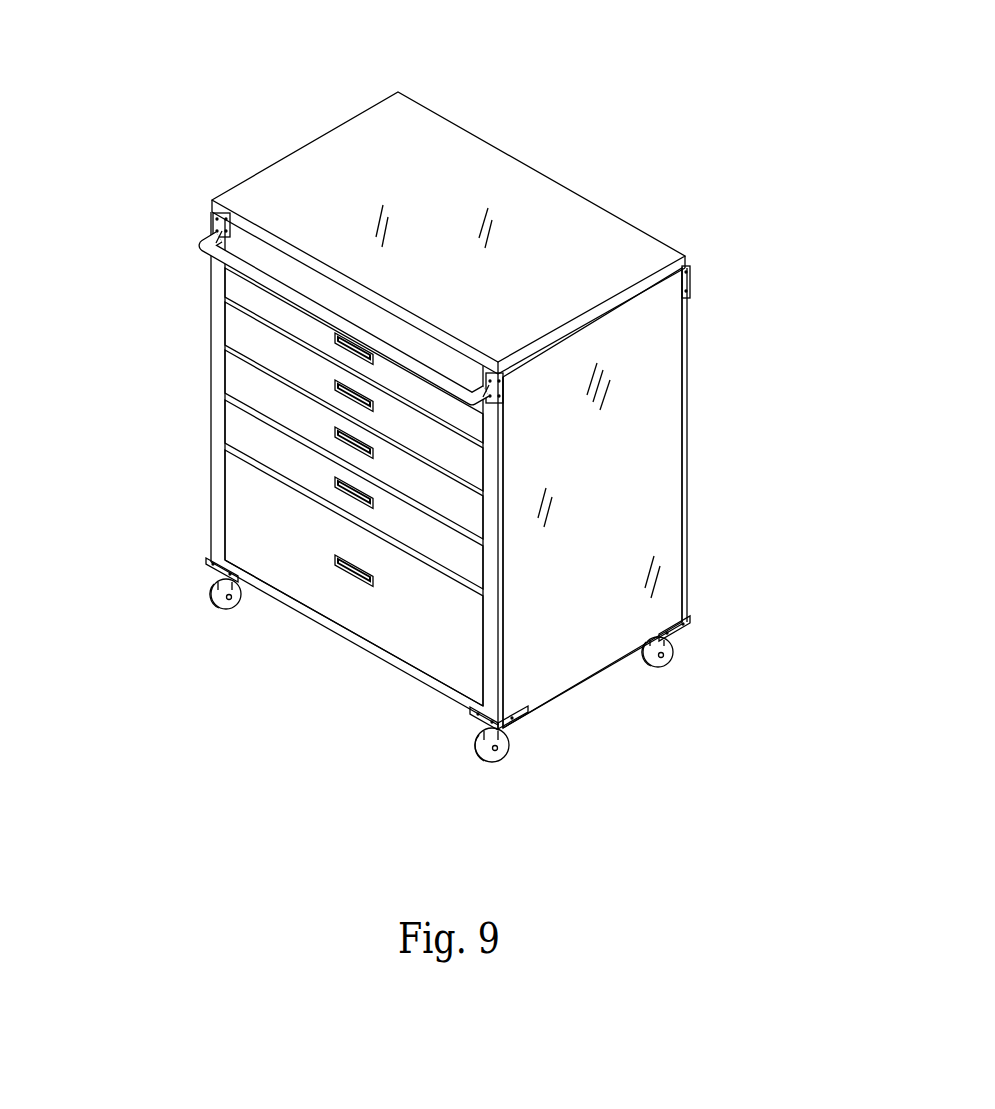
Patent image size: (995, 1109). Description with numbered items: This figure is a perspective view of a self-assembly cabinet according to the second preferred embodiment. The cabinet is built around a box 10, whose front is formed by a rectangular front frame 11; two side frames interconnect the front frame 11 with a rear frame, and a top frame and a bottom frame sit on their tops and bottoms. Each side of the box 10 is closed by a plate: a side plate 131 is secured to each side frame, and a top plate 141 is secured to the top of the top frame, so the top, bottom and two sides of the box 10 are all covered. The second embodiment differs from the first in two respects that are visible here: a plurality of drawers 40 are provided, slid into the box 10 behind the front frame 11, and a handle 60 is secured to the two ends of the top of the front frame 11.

The box 10 is at (451, 387).
The front frame 11 is at (218, 422).
The drawer 40 is at (240, 330).
The handle 60 is at (198, 242).
The side plate 131 is at (640, 488).
The top plate 141 is at (347, 162).